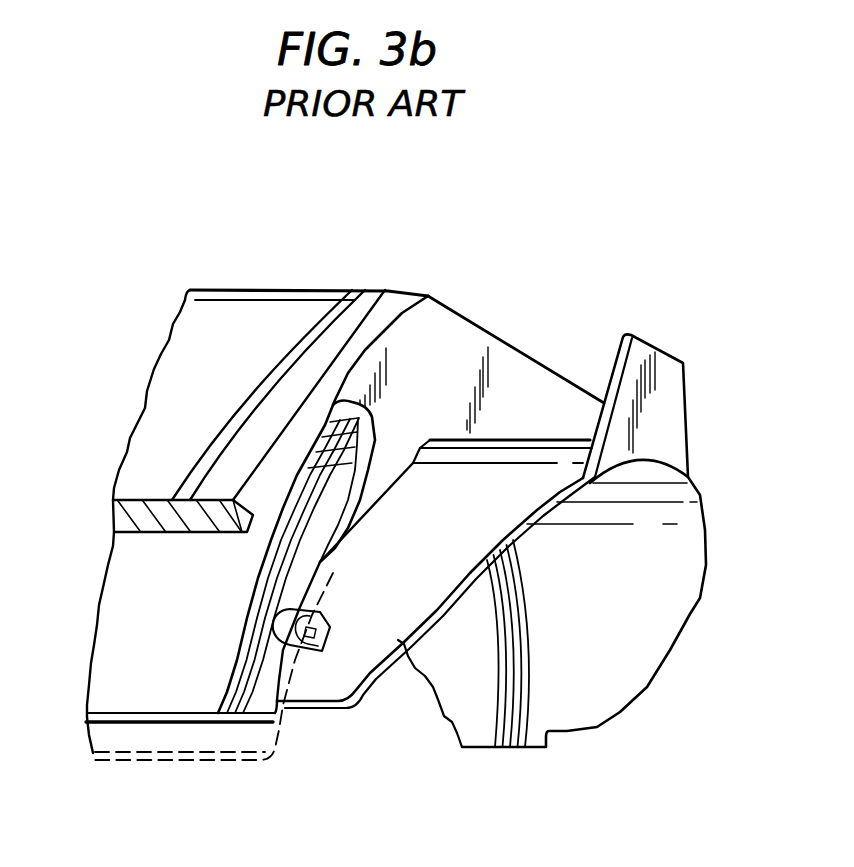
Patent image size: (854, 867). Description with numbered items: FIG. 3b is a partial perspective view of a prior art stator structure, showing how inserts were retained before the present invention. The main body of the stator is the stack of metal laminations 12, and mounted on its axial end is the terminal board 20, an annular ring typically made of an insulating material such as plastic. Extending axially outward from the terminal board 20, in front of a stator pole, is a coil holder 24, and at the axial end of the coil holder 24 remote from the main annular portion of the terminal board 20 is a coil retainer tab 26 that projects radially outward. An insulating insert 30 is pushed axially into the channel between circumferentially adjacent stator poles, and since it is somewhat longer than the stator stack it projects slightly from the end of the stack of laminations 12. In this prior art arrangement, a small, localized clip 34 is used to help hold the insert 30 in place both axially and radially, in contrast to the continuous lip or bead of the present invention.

The stack of metal laminations 12 is at (107, 647).
The terminal board 20 is at (470, 340).
The coil holder 24 is at (683, 600).
The coil retainer tab 26 is at (678, 396).
The insert 30 is at (193, 752).
The clip 34 is at (320, 648).